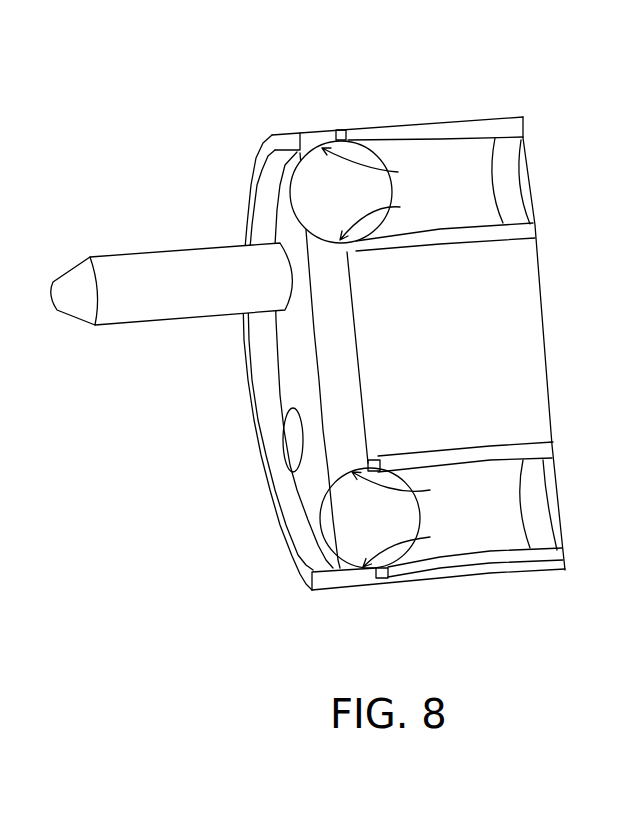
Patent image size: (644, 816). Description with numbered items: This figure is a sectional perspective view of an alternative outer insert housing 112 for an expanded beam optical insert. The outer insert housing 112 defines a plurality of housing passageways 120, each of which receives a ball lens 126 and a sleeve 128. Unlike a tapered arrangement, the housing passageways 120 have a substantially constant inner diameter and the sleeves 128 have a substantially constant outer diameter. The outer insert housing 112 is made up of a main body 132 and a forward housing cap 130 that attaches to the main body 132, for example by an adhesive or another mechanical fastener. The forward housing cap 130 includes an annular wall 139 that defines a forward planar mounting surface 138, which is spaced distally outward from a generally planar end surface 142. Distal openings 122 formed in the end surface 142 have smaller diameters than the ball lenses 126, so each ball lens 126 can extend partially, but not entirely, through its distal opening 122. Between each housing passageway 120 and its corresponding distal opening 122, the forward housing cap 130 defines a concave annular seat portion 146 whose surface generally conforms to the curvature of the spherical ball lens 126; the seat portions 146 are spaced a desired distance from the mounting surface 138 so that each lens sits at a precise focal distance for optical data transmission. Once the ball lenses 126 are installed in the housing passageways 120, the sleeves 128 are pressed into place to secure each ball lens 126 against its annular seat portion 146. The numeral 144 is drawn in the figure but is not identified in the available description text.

The outer insert housing 112 is at (294, 66).
The housing passageway 120 is at (519, 106).
The distal opening 122 is at (282, 249).
The ball lens 126 is at (352, 204).
The sleeve 128 is at (441, 128).
The forward housing cap 130 is at (282, 133).
The main body 132 is at (377, 124).
The forward planar mounting surface 138 is at (245, 470).
The annular wall 139 is at (251, 397).
The end surface 142 is at (296, 346).
The inner wall 144 is at (310, 283).
The annular seat portion 146 is at (396, 357).